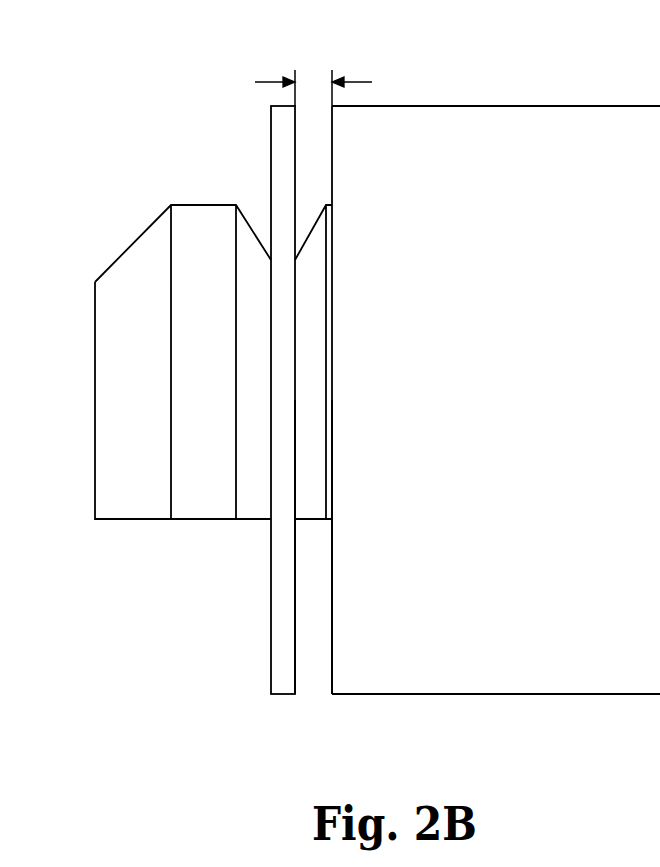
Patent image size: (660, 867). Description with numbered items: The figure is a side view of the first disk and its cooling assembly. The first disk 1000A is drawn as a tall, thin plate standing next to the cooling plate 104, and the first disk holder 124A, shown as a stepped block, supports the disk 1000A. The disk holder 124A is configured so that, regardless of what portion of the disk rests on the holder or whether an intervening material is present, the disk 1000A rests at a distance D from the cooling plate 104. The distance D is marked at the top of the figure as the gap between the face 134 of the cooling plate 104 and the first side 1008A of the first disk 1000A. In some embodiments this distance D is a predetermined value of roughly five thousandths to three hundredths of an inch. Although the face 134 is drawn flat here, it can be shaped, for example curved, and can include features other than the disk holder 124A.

The cooling plate 104 is at (462, 70).
The first disk 1000A is at (282, 135).
The distance D is at (313, 87).
The first disk holder 124A is at (118, 163).
The first side of the first disk 1008A is at (295, 675).
The face of the cooling plate 134 is at (332, 673).